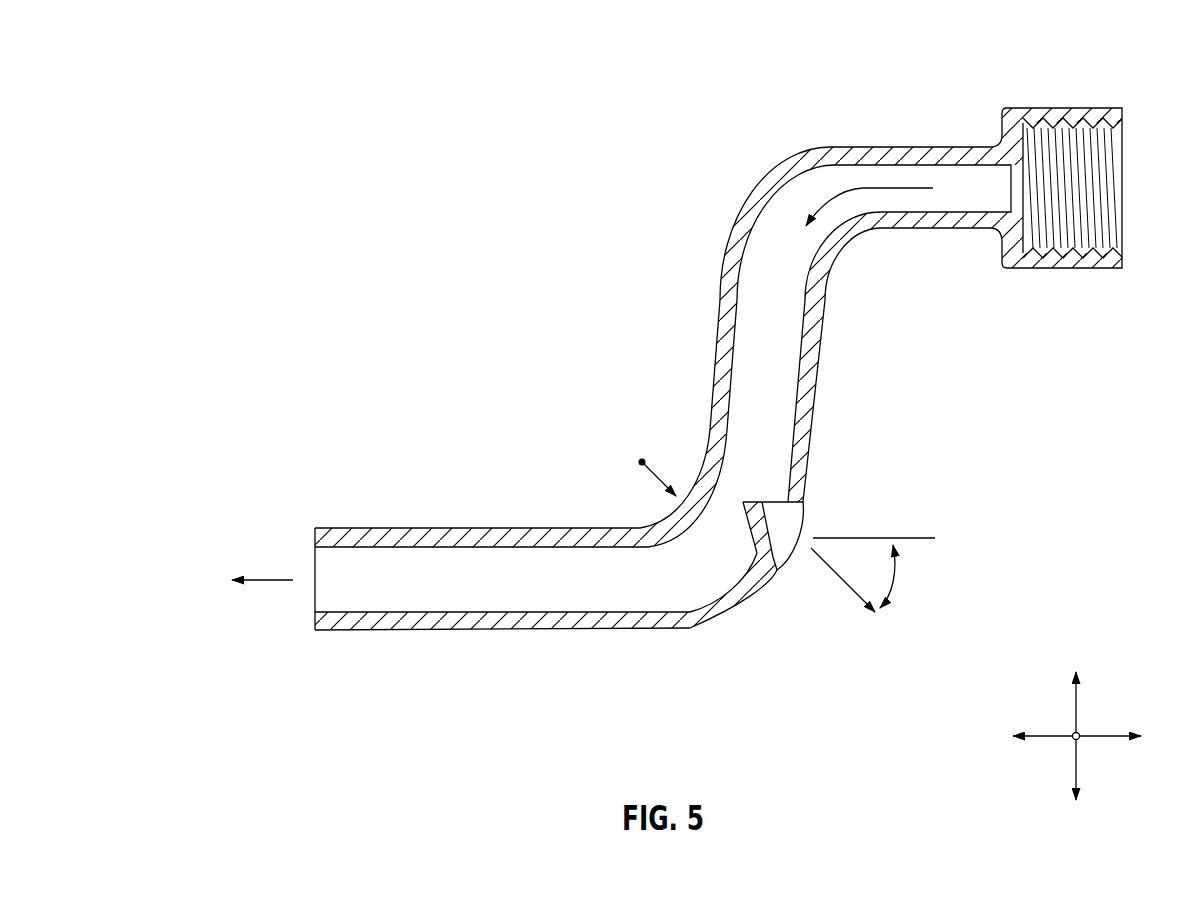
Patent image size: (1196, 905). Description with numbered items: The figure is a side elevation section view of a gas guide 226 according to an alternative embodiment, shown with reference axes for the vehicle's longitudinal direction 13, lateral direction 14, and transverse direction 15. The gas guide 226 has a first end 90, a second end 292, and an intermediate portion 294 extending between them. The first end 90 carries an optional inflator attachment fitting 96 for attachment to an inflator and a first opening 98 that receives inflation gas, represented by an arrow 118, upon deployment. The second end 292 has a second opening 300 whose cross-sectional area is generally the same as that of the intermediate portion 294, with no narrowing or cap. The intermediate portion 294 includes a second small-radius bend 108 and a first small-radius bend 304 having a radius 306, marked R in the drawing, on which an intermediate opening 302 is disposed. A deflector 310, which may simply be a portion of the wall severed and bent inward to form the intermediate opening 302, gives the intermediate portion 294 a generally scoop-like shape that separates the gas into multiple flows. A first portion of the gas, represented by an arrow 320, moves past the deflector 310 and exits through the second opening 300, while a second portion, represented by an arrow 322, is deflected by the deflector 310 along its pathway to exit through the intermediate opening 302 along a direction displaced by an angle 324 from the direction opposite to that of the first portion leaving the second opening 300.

The gas guide 226 is at (553, 146).
The first end 90 is at (938, 124).
The inflator attachment fitting 96 is at (1066, 113).
The first opening 98 is at (1018, 160).
The second small-radius bend 108 is at (749, 180).
The arrow representing inflation gas 118 is at (868, 192).
The intermediate portion 294 is at (687, 419).
The radius 306 is at (665, 478).
The bend radius R is at (646, 470).
The second end 292 is at (386, 507).
The second opening 300 is at (312, 553).
The arrow representing first portion of inflation gas 320 is at (250, 581).
The first small-radius bend 304 is at (770, 623).
The deflector 310 is at (748, 533).
The intermediate opening 302 is at (805, 510).
The arrow representing second portion of inflation gas 322 is at (857, 597).
The angle 324 is at (888, 574).
The longitudinal direction 13 is at (1108, 738).
The lateral direction 14 is at (1072, 740).
The transverse direction 15 is at (1077, 708).